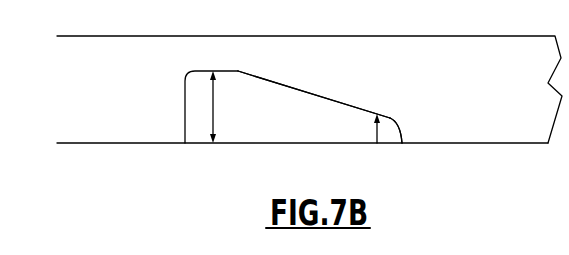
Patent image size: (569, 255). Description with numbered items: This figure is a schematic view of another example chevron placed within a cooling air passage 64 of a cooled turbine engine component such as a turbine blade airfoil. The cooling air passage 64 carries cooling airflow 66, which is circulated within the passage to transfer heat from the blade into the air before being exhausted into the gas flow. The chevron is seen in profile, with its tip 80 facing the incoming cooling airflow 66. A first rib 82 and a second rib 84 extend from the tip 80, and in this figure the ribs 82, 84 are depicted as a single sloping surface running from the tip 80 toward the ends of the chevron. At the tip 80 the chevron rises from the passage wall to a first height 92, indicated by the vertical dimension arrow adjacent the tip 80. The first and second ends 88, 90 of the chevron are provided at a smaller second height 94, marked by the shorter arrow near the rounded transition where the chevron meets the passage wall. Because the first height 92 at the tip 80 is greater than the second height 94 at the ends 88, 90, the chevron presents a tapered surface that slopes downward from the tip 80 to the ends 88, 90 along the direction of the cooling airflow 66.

The cooling air passage 64 is at (160, 68).
The cooling airflow 66 is at (147, 97).
The tip 80 is at (184, 119).
The first rib 82 is at (303, 120).
The second rib 84 is at (314, 94).
The first end 88 is at (404, 131).
The second end 90 is at (396, 130).
The first height 92 is at (216, 111).
The second height 94 is at (377, 139).